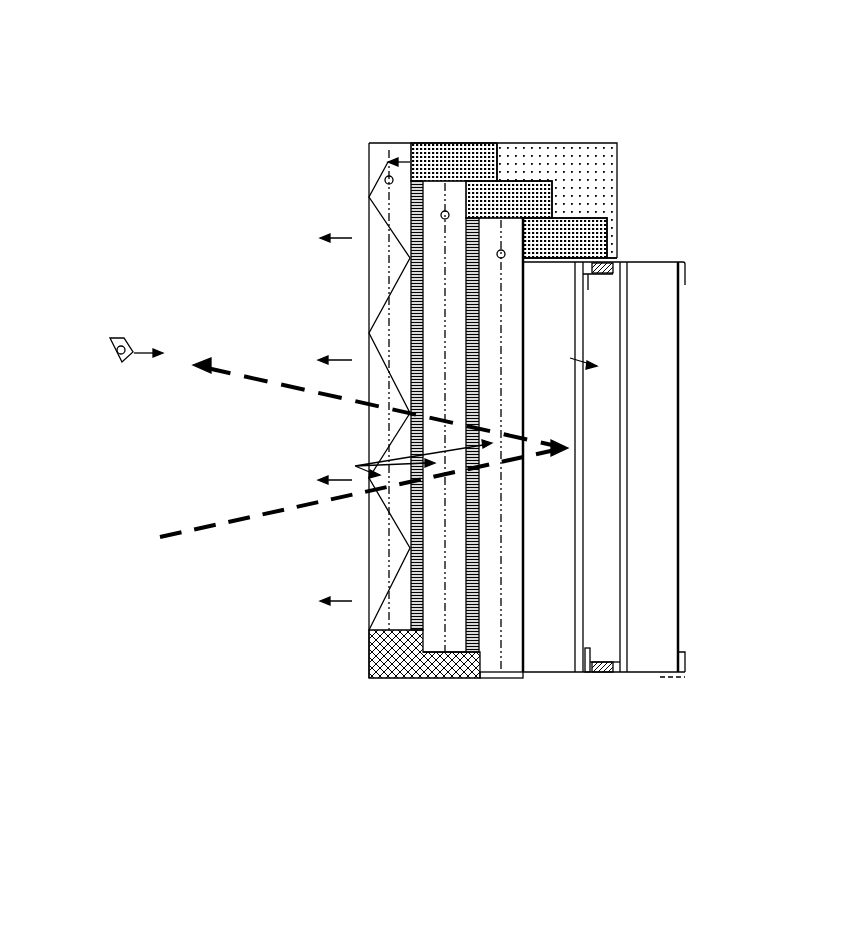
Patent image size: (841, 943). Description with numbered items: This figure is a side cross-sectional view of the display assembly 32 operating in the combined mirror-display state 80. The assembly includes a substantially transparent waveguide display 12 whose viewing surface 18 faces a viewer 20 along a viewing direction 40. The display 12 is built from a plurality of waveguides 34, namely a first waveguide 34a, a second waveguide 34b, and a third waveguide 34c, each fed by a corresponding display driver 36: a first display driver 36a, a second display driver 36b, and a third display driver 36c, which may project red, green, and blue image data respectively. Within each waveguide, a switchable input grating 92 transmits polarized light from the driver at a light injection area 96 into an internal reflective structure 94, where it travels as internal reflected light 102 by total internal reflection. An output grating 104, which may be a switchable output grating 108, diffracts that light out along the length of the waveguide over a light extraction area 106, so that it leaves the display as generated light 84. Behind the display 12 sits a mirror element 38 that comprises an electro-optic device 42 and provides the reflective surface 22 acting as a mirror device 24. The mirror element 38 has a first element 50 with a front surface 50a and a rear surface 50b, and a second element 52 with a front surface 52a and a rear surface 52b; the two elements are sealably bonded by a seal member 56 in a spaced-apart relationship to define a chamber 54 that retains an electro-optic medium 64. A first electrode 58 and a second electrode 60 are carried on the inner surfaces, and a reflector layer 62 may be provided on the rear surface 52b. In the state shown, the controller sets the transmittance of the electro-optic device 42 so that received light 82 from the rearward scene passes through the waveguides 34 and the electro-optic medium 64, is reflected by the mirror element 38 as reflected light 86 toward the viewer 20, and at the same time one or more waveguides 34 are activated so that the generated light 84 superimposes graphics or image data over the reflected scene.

The waveguide display 12 is at (437, 435).
The combined mirror-display state 80 is at (256, 200).
The viewing surface 18 is at (368, 222).
The viewer 20 is at (111, 338).
The reflective surface 22 is at (620, 548).
The mirror device 24 is at (330, 396).
The mirror element 38 is at (369, 330).
The display assembly 32 is at (368, 124).
The waveguides 34 is at (493, 230).
The first waveguide 34a is at (410, 625).
The second waveguide 34b is at (460, 650).
The third waveguide 34c is at (510, 655).
The display driver 36 is at (573, 228).
The first display driver 36a is at (472, 143).
The second display driver 36b is at (542, 205).
The third display driver 36c is at (590, 233).
The viewing direction 40 is at (151, 371).
The electro-optic device 42 is at (641, 230).
The first element 50 is at (557, 313).
The front surface of front element 50a is at (519, 344).
The rear surface of front element 50b is at (567, 357).
The second element 52 is at (633, 362).
The front surface of rear element 52a is at (612, 384).
The rear surface of rear element 52b is at (657, 413).
The chamber 54 is at (597, 433).
The seal member 56 is at (598, 663).
The first electrode 58 is at (575, 467).
The second electrode 60 is at (615, 503).
The reflector layer 62 is at (663, 545).
The electro-optic medium 64 is at (588, 570).
The received light 82 is at (237, 518).
The generated light 84 is at (333, 244).
The reflected light 86 is at (333, 393).
The switchable input grating 92 is at (374, 393).
The light injection area 96 is at (394, 146).
The internal reflective structure 94 is at (355, 466).
The internal reflected light 102 is at (410, 548).
The output grating 104 is at (302, 642).
The light extraction area 106 is at (302, 642).
The switchable output grating 108 is at (372, 620).